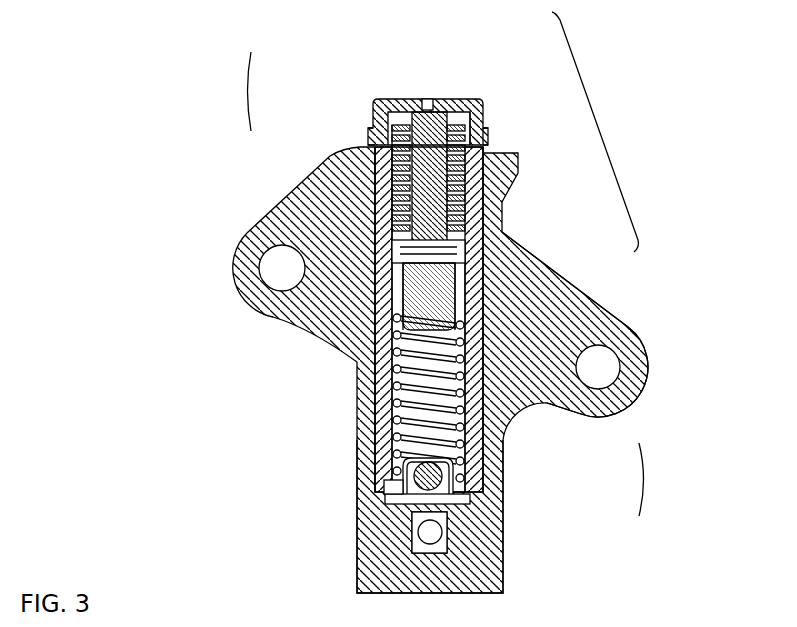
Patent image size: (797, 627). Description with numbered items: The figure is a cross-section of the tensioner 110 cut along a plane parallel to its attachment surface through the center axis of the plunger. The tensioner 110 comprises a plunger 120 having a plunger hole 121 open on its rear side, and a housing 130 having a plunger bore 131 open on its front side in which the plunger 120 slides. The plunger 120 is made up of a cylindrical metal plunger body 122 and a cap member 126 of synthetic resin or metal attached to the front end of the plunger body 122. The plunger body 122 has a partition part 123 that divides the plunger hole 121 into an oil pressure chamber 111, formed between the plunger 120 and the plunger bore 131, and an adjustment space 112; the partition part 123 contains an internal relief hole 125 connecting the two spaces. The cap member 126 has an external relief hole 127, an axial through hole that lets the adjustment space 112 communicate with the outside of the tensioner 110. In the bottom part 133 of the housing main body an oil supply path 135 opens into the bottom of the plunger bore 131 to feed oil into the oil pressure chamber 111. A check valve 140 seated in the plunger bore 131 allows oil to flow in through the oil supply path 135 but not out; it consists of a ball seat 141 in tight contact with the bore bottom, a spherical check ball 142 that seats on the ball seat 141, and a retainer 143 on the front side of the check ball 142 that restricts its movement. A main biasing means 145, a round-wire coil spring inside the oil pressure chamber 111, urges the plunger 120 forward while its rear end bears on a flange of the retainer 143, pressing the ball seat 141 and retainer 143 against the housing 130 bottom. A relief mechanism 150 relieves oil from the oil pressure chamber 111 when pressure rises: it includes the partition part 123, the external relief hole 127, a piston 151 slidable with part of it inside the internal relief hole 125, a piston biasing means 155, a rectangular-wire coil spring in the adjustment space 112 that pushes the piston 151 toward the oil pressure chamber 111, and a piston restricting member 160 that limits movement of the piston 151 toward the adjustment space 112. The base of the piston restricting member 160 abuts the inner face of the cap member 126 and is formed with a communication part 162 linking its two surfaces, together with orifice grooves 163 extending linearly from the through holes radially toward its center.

The tensioner 110 is at (225, 292).
The oil pressure chamber 111 is at (400, 440).
The adjustment space 112 is at (390, 240).
The plunger 120 is at (229, 91).
The plunger hole 121 is at (392, 388).
The plunger body 122 is at (372, 134).
The partition part 123 is at (460, 256).
The internal relief hole 125 is at (385, 303).
The cap member 126 is at (374, 114).
The external relief hole 127 is at (468, 100).
The housing 130 is at (615, 318).
The plunger bore 131 is at (378, 193).
The bottom part 133 is at (497, 568).
The oil supply path 135 is at (426, 535).
The check valve 140 is at (657, 479).
The ball seat 141 is at (458, 500).
The check ball 142 is at (455, 488).
The retainer 143 is at (450, 468).
The main biasing means 145 is at (393, 470).
The relief mechanism 150 is at (595, 132).
The piston 151 is at (445, 302).
The piston biasing means 155 is at (452, 198).
The piston restricting member 160 is at (488, 132).
The communication part 162 is at (404, 120).
The orifice grooves 163 is at (428, 99).